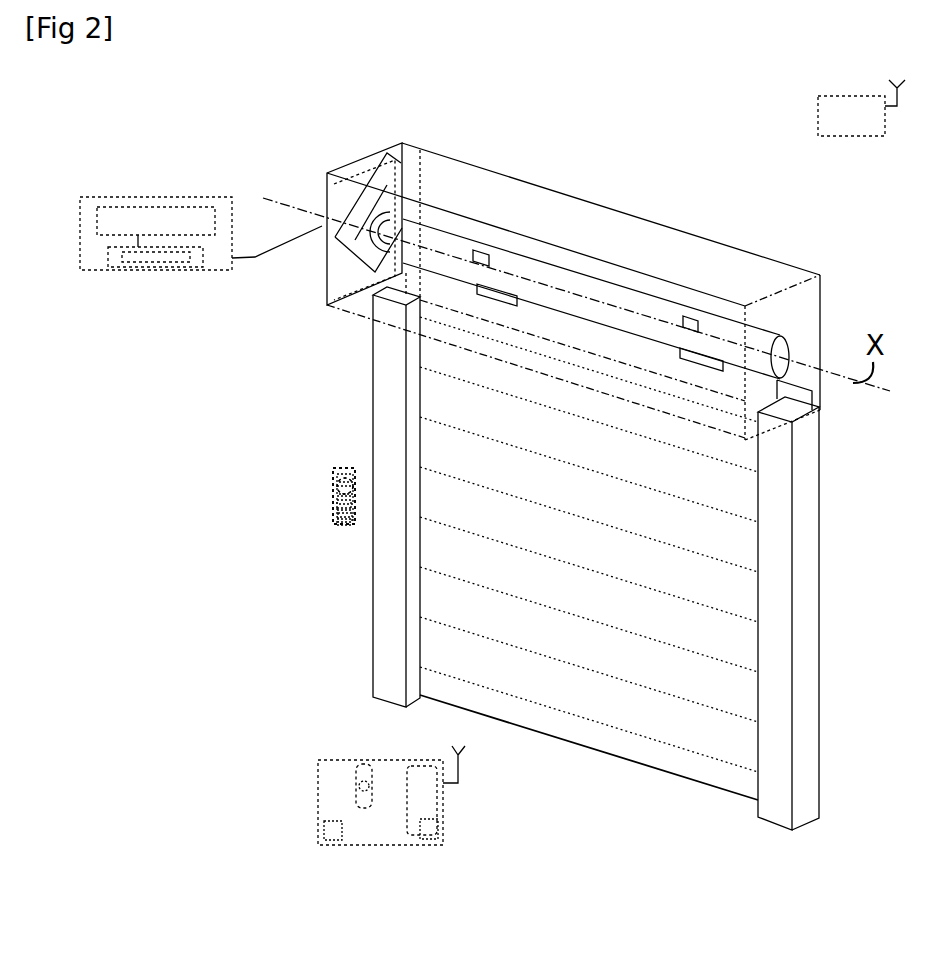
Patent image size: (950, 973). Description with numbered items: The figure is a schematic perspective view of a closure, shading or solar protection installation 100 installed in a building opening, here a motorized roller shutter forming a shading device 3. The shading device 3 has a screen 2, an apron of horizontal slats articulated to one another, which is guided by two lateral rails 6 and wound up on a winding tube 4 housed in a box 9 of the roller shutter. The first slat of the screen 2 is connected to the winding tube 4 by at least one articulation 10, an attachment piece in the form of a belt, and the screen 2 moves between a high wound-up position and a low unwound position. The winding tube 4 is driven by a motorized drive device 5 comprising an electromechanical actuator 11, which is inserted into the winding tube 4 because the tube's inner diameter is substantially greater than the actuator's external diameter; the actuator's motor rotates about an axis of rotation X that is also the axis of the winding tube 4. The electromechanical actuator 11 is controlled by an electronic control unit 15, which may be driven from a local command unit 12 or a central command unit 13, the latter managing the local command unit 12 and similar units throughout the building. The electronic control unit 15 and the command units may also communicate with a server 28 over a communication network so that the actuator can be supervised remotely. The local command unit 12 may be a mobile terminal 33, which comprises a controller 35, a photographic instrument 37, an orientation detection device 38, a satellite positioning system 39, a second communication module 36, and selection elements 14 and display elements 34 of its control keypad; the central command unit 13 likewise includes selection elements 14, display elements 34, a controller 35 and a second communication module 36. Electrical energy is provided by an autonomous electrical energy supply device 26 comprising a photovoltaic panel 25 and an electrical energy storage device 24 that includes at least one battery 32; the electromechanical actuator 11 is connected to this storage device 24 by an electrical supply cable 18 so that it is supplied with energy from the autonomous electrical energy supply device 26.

The screen 2 is at (607, 713).
The shading device 3 is at (352, 621).
The winding tube 4 is at (560, 275).
The motorized drive device 5 is at (457, 222).
The lateral rails 6 is at (387, 675).
The box 9 is at (728, 265).
The articulation 10 is at (483, 254).
The electromechanical actuator 11 is at (350, 267).
The local command unit 12 is at (331, 468).
The central command unit 13 is at (332, 797).
The selection elements 14 is at (333, 488).
The electronic control unit 15 is at (403, 238).
The electrical supply cable 18 is at (250, 262).
The electrical energy storage device 24 is at (115, 262).
The photovoltaic panel 25 is at (158, 224).
The autonomous electrical energy supply device 26 is at (92, 197).
The server 28 is at (838, 113).
The battery 32 is at (158, 263).
The mobile terminal 33 is at (344, 496).
The display elements 34 is at (347, 475).
The controller 35 is at (333, 513).
The second communication module 36 is at (350, 523).
The photographic instrument 37 is at (333, 502).
The orientation detection device 38 is at (351, 492).
The satellite positioning system 39 is at (333, 481).
The closure, shading or solar protection installation 100 is at (866, 585).